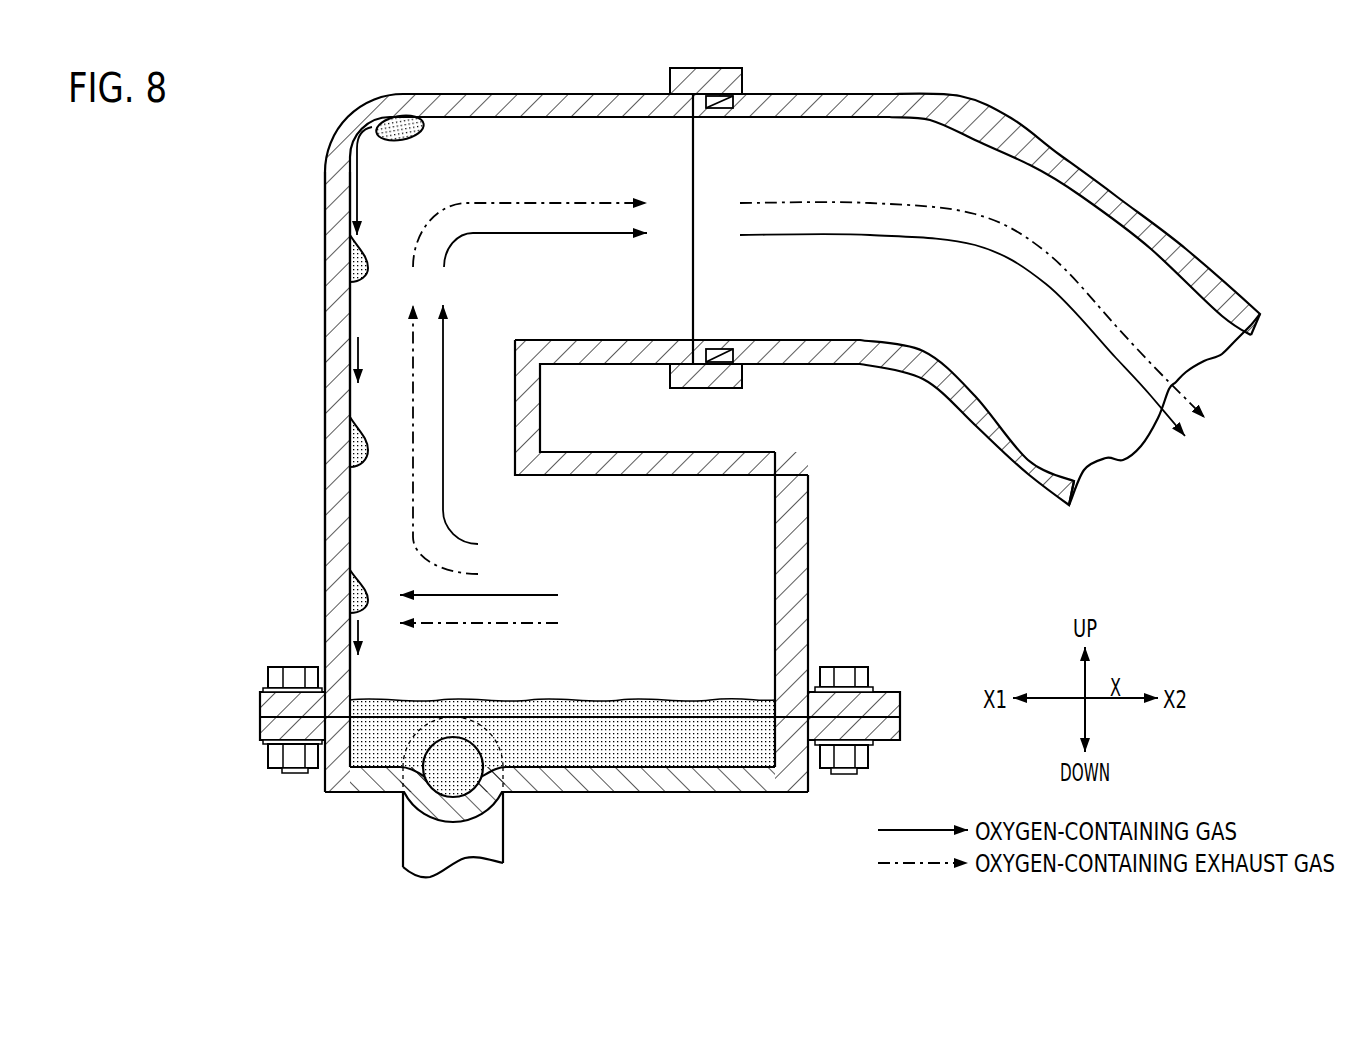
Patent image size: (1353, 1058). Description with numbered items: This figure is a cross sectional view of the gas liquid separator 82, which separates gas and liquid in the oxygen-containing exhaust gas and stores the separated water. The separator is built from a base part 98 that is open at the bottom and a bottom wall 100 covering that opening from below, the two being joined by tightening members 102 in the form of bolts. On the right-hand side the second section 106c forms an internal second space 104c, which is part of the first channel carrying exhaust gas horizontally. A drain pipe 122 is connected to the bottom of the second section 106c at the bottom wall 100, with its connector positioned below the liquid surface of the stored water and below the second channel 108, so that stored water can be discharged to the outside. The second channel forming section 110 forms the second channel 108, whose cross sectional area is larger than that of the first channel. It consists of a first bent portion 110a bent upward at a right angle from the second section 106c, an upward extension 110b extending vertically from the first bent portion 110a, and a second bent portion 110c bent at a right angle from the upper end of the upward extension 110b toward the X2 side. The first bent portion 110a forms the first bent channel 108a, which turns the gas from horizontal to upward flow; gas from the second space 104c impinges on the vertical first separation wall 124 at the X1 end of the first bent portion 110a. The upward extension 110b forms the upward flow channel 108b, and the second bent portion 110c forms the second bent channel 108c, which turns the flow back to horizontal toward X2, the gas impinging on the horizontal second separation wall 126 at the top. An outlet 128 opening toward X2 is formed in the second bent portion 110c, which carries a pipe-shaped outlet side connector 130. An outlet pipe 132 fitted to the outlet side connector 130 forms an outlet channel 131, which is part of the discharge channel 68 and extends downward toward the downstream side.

The gas liquid separator 82 is at (317, 108).
The base part 98 is at (268, 705).
The bottom wall 100 is at (353, 792).
The tightening members 102 is at (276, 678).
The second space 104c is at (727, 588).
The second section 106c is at (808, 522).
The second channel 108 is at (541, 435).
The first bent channel 108a is at (516, 631).
The upward flow channel 108b is at (478, 410).
The second bent channel 108c is at (477, 270).
The second channel forming section 110 is at (213, 197).
The first bent portion 110a is at (325, 568).
The upward extension 110b is at (325, 380).
The second bent portion 110c is at (325, 220).
The drain pipe 122 is at (490, 833).
The first separation wall 124 is at (350, 520).
The second separation wall 126 is at (490, 117).
The outlet 128 is at (693, 287).
The outlet side connector 130 is at (720, 388).
The outlet channel 131 is at (1095, 447).
The discharge channel 68 is at (1120, 510).
The outlet pipe 132 is at (1142, 207).